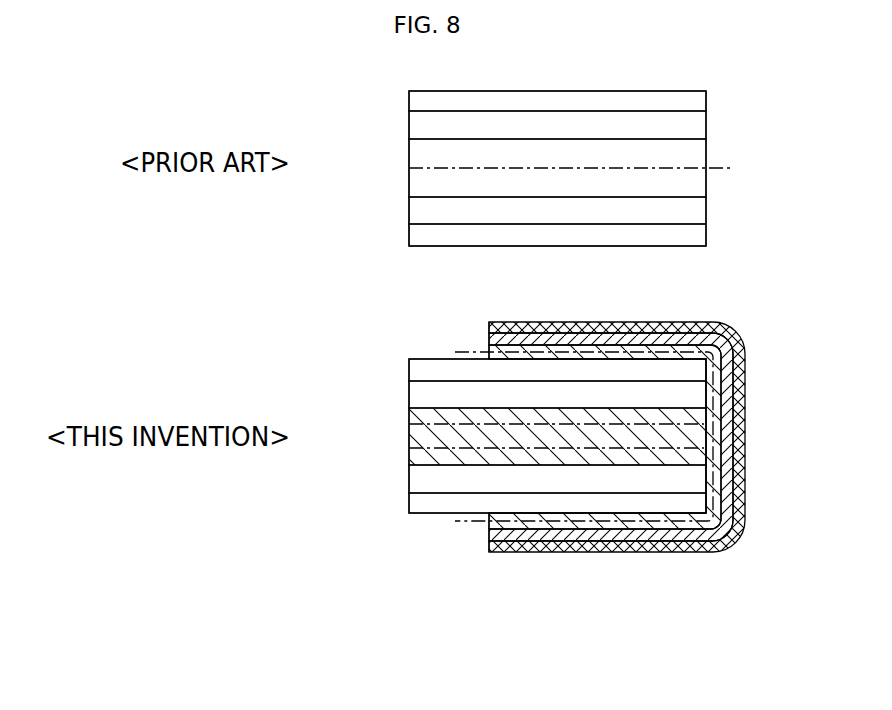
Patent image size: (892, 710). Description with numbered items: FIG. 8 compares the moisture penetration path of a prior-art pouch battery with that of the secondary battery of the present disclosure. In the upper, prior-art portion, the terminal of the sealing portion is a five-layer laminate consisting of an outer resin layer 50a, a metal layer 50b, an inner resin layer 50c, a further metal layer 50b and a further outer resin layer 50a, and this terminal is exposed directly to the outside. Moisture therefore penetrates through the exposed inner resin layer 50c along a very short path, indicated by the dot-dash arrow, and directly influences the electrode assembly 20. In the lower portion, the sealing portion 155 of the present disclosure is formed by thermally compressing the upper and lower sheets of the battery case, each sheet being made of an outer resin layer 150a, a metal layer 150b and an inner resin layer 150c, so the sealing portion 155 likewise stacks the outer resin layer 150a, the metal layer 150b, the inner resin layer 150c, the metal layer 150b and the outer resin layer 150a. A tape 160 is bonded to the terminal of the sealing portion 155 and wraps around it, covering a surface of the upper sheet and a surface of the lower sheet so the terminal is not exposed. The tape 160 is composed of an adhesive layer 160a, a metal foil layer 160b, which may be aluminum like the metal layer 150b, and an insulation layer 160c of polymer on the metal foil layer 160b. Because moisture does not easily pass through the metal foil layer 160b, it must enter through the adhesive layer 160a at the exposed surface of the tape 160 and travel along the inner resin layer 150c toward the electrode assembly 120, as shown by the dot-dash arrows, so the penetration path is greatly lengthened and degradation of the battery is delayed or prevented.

The electrode assembly 20 is at (409, 168).
The outer resin layer 50a is at (706, 102).
The metal layer 50b is at (706, 127).
The inner resin layer 50c is at (706, 152).
The electrode assembly 120 is at (409, 424).
The outer resin layer 150a is at (697, 373).
The metal layer 150b is at (697, 396).
The inner resin layer 150c is at (700, 444).
The sealing portion 155 is at (478, 578).
The tape 160 is at (600, 476).
The adhesive layer 160a is at (575, 546).
The metal foil layer 160b is at (623, 536).
The insulation layer 160c is at (672, 522).